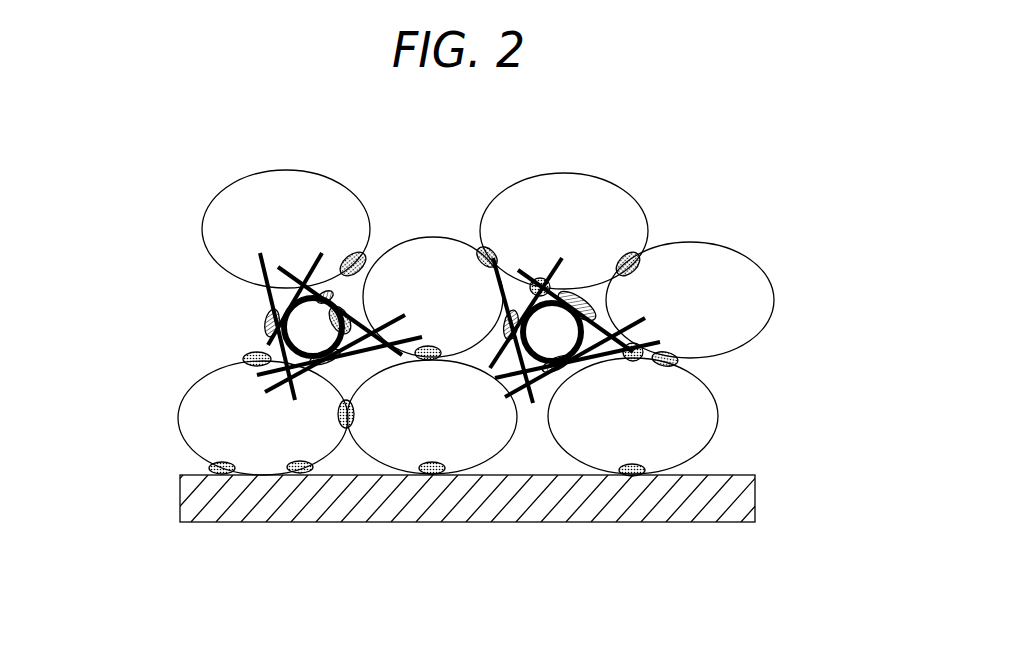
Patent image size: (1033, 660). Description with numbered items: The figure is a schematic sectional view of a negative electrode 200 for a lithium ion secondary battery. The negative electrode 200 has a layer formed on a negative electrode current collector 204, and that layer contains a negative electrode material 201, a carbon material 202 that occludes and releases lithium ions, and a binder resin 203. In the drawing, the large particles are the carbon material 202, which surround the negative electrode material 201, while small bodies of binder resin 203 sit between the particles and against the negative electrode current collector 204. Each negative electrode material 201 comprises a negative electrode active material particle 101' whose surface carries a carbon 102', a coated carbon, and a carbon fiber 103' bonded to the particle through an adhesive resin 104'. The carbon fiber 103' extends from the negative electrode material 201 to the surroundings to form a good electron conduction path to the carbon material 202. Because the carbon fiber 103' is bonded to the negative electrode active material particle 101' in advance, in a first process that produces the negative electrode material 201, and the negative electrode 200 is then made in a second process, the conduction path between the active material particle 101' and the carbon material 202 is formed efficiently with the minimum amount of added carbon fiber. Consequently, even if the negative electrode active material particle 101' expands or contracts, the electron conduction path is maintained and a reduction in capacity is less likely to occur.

The negative electrode 200 is at (625, 141).
The negative electrode material 201 is at (108, 235).
The carbon material 202 is at (705, 258).
The binder resin 203 is at (677, 362).
The negative electrode current collector 204 is at (747, 504).
The negative electrode active material particle 101' is at (345, 342).
The carbon (coated carbon) 102' is at (355, 328).
The carbon fiber 103' is at (385, 322).
The adhesive resin 104' is at (315, 324).